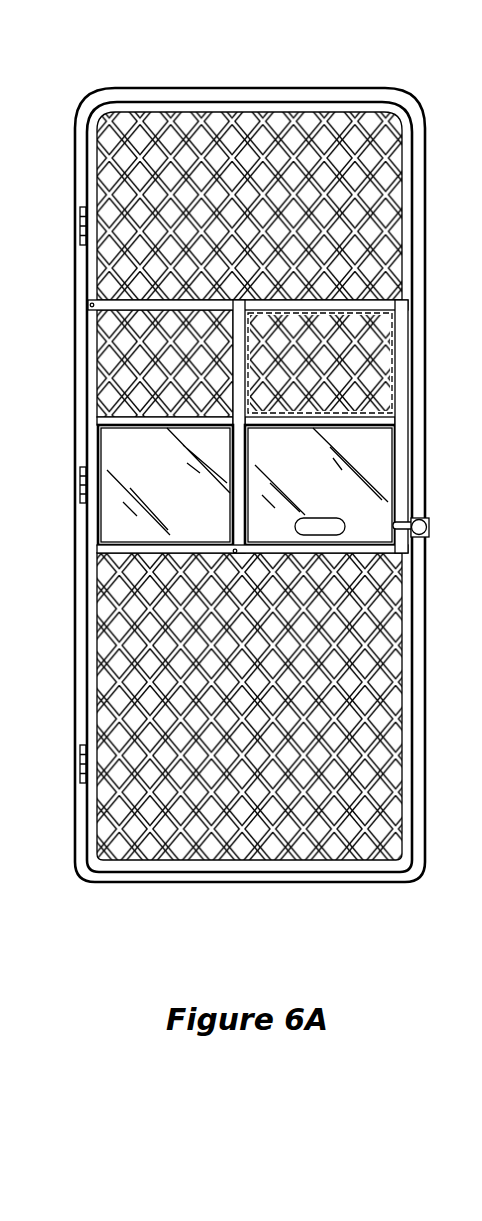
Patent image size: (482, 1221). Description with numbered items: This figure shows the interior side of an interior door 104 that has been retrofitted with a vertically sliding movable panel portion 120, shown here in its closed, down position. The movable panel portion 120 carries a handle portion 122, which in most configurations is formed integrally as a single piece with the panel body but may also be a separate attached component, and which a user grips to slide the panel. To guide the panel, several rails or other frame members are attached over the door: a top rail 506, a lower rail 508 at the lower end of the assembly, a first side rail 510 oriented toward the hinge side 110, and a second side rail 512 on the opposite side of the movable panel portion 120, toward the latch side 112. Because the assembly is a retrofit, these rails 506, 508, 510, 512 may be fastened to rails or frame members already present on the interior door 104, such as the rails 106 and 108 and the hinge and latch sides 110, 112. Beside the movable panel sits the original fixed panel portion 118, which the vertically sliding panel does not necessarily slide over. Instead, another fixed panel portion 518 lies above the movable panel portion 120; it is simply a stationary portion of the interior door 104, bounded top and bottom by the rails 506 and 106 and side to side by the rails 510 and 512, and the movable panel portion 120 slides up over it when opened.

The interior door 104 is at (394, 78).
The rail 106 is at (135, 418).
The rail 108 is at (157, 550).
The hinge side 110 is at (426, 712).
The latch side 112 is at (88, 416).
The fixed panel portion 118 is at (165, 485).
The movable panel portion 120 is at (325, 486).
The handle portion 122 is at (324, 535).
The top rail 506 is at (132, 305).
The lower rail 508 is at (278, 550).
The first side rail 510 is at (402, 455).
The second side rail 512 is at (237, 350).
The fixed panel portion 518 is at (392, 343).